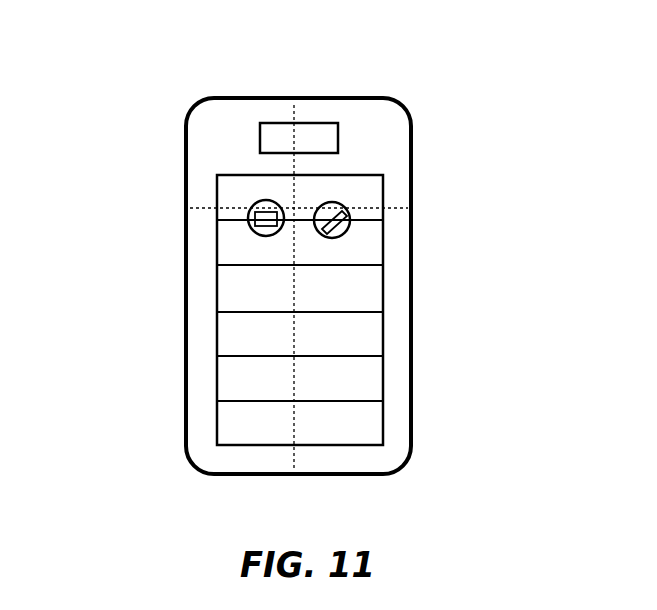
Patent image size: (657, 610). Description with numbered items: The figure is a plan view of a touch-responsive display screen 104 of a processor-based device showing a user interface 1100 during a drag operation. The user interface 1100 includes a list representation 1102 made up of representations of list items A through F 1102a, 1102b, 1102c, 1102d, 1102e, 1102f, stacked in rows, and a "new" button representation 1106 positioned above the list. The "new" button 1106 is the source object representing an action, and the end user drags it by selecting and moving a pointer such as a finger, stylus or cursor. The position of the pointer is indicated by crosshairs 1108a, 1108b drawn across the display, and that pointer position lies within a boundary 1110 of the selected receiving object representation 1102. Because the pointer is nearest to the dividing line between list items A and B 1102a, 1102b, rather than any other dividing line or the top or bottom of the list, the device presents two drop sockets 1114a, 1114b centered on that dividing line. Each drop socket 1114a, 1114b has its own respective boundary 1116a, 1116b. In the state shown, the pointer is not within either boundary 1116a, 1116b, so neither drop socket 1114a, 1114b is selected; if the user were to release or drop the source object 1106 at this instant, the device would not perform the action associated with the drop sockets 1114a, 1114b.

The touch-responsive display screen 104 is at (413, 118).
The user interface 1100 is at (210, 110).
The list representation 1102 is at (233, 175).
The representation of list item A 1102a is at (368, 197).
The representation of list item B 1102b is at (368, 242).
The representation of list item C 1102c is at (370, 286).
The representation of list item D 1102d is at (370, 330).
The representation of list item E 1102e is at (370, 392).
The representation of list item F 1102f is at (370, 425).
The "new" button representation 1106 is at (313, 123).
The crosshair 1108a is at (290, 113).
The crosshair 1108b is at (215, 208).
The boundary 1110 is at (366, 447).
The drop socket 1114a is at (276, 203).
The drop socket 1114b is at (338, 203).
The boundary of drop socket 1116a is at (265, 237).
The boundary of drop socket 1116b is at (331, 238).